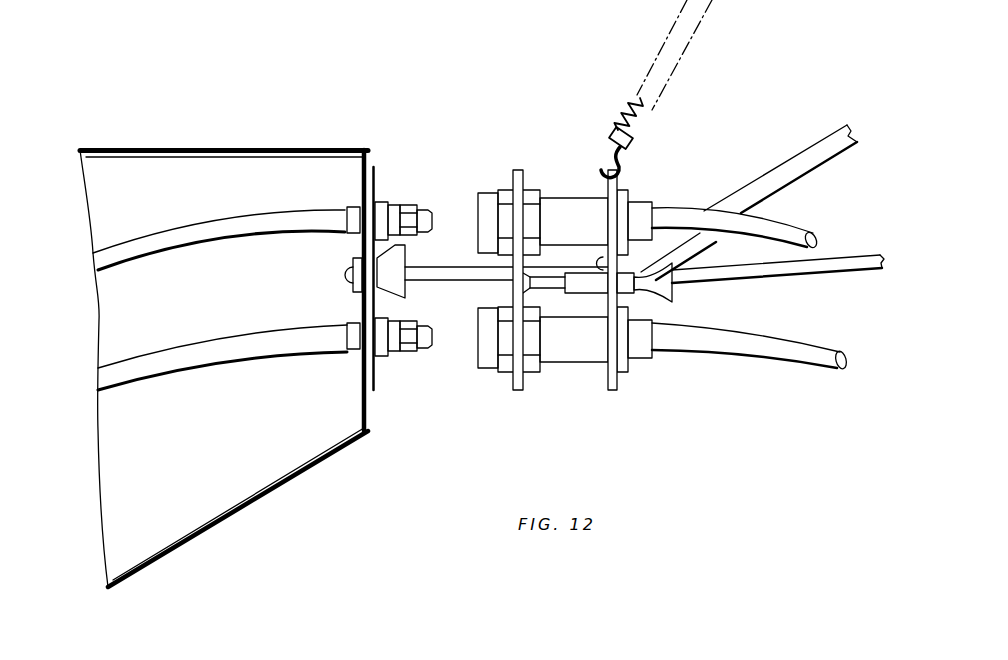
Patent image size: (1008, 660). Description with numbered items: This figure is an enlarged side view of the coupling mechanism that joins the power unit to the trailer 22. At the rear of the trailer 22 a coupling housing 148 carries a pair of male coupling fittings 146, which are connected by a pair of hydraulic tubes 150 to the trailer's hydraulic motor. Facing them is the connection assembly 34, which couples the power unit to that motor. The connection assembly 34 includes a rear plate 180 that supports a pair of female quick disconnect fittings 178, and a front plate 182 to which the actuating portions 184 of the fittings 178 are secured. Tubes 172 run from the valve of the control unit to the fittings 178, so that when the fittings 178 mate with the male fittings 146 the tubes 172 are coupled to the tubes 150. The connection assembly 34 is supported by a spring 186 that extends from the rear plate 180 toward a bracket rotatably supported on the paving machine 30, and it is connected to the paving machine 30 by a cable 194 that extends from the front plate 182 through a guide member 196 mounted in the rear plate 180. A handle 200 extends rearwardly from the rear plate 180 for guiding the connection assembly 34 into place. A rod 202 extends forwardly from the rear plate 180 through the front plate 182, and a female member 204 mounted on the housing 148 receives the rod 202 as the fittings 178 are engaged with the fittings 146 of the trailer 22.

The trailer 22 is at (62, 120).
The coupling housing 148 is at (167, 153).
The hydraulic tubes 150 is at (163, 243).
The male coupling fittings 146 is at (402, 190).
The female member 204 is at (406, 249).
The rod 202 is at (473, 277).
The connection assembly 34 is at (546, 242).
The actuating portions 184 is at (507, 197).
The female quick disconnect fittings 178 is at (569, 182).
The front plate 182 is at (518, 387).
The rear plate 180 is at (615, 380).
The tubes 172 is at (785, 228).
The handle 200 is at (790, 168).
The guide member 196 is at (650, 275).
The cable 194 is at (762, 272).
The spring 186 is at (620, 127).
The paving machine 30 is at (802, 75).